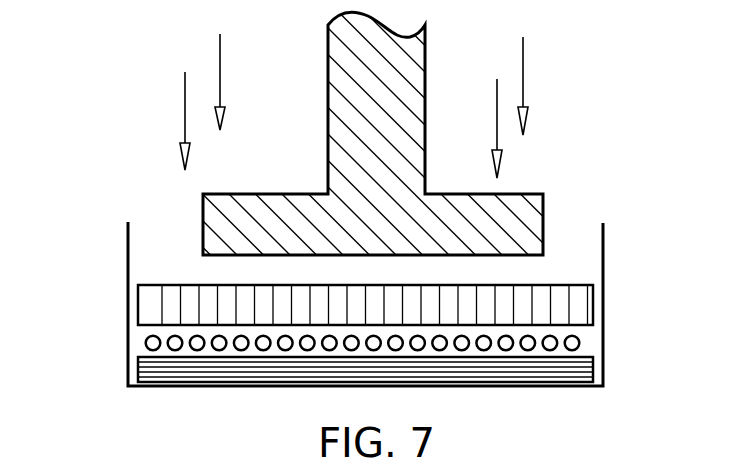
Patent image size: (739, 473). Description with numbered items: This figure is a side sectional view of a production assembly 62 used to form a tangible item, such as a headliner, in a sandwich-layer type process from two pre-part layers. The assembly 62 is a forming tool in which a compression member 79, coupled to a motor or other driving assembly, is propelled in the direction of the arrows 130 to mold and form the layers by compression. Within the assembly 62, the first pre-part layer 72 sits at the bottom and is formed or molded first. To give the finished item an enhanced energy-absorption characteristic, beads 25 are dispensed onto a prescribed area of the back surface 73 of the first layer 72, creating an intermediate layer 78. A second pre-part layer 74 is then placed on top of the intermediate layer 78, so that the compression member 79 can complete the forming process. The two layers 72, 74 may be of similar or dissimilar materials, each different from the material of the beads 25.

The assembly 62 is at (103, 177).
The compression member 79 is at (327, 134).
The arrows 130 is at (523, 73).
The second pre-part layer 74 is at (138, 316).
The back surface 73 is at (373, 316).
The intermediate layer 78 is at (580, 337).
The beads 25 is at (580, 344).
The first pre-part layer 72 is at (138, 374).